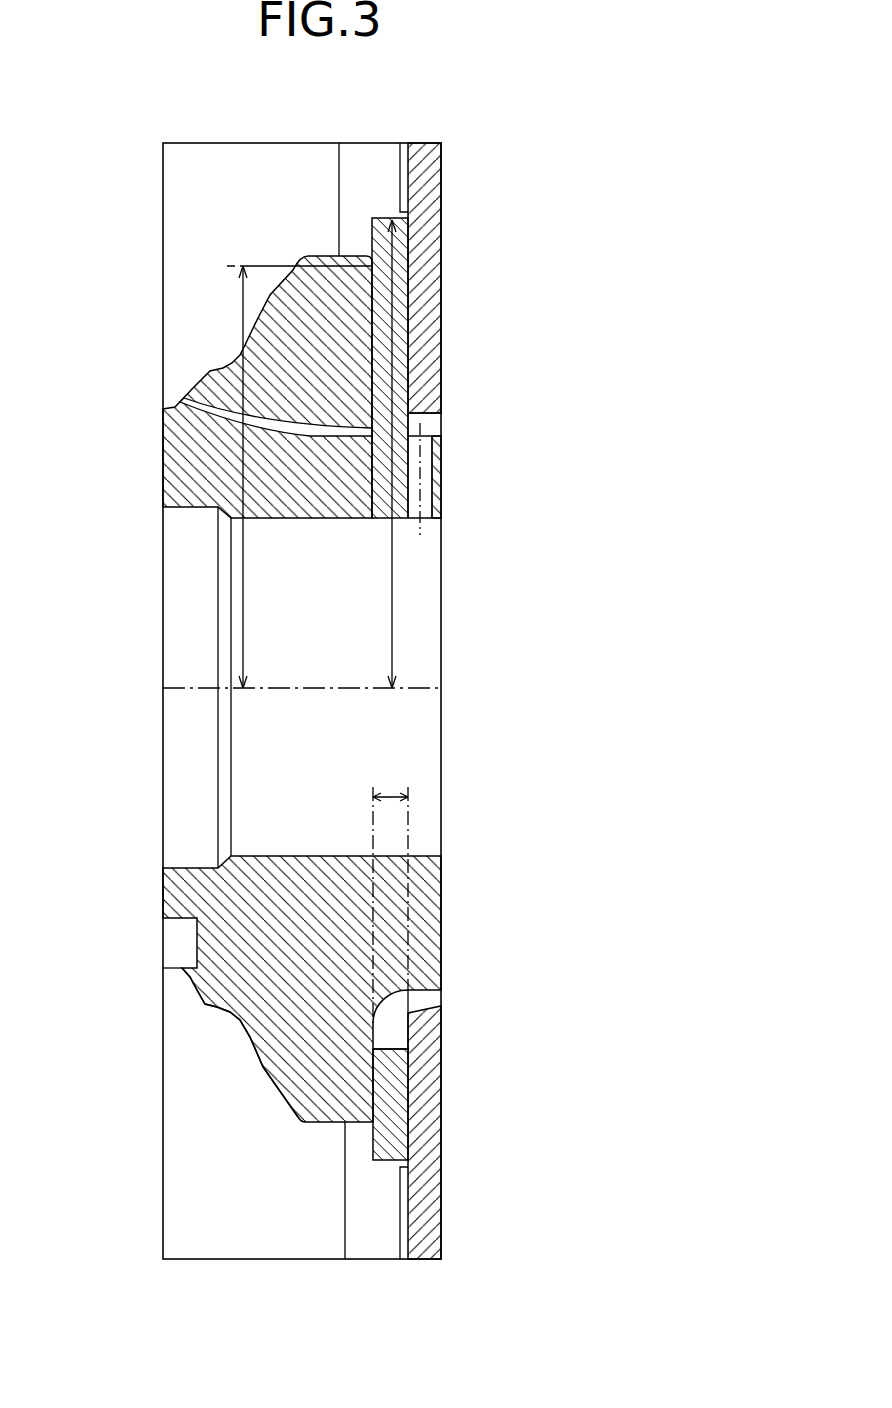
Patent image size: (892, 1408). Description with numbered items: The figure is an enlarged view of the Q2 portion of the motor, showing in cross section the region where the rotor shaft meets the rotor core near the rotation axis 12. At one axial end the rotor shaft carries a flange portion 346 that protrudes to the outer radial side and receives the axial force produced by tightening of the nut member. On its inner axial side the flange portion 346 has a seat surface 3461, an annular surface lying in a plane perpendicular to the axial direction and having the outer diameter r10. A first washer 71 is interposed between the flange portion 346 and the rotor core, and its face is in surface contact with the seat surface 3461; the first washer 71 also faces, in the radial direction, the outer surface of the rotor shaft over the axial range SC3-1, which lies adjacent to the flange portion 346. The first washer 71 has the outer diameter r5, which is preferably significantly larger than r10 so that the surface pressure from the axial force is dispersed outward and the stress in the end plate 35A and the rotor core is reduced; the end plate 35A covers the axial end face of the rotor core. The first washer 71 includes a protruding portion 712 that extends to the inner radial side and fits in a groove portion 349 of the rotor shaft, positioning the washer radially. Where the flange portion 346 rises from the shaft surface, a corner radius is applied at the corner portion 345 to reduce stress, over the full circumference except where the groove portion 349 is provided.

The Q2 portion Q2 is at (228, 143).
The outer diameter of the first washer r5 is at (383, 303).
The outer diameter of the seat surface r10 is at (285, 477).
The end plate 35A is at (420, 315).
The groove portion 349 is at (435, 437).
The protruding portion 712 is at (412, 448).
The rotation axis 12 is at (410, 688).
The axial range SC3-1 is at (393, 797).
The flange portion 346 is at (317, 1065).
The seat surface 3461 is at (378, 1080).
The first washer 71 is at (387, 1132).
The corner portion 345 is at (383, 1003).